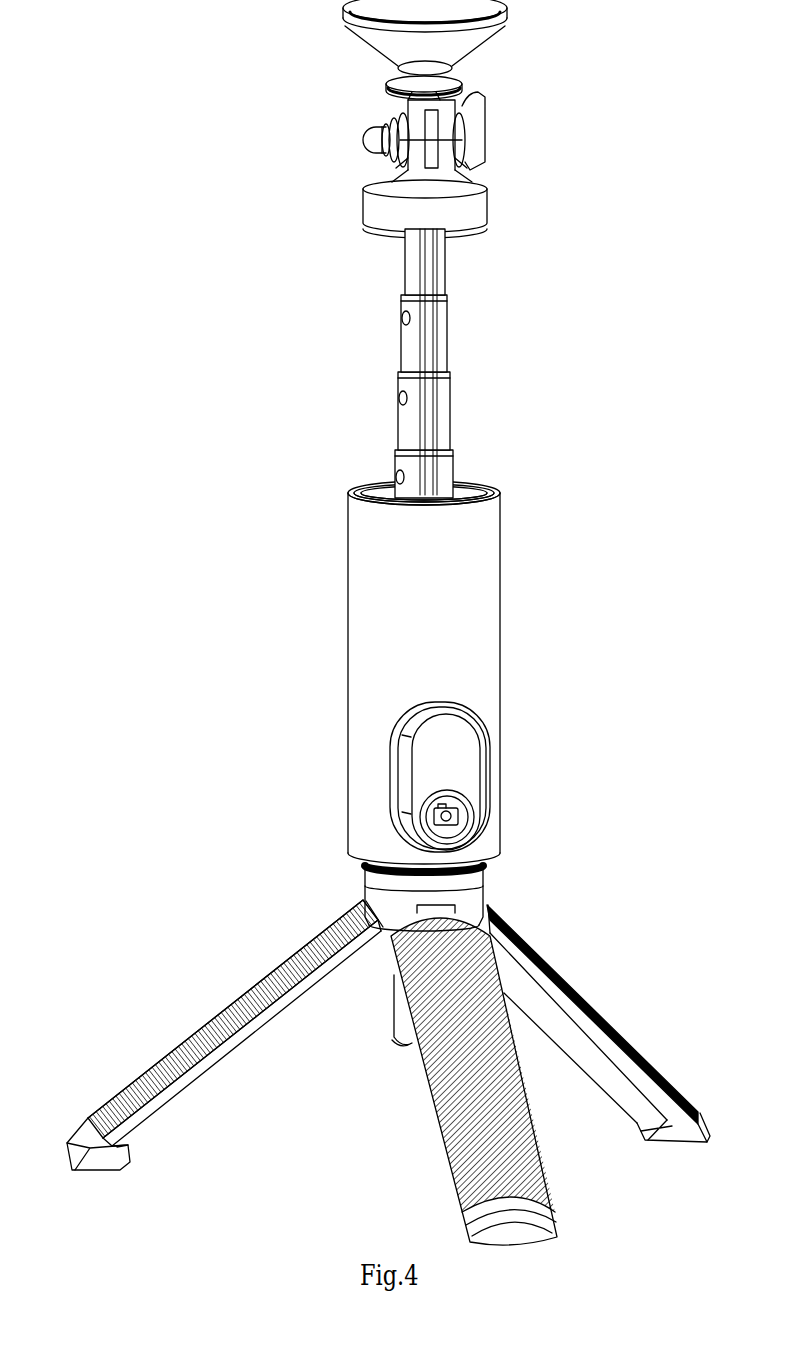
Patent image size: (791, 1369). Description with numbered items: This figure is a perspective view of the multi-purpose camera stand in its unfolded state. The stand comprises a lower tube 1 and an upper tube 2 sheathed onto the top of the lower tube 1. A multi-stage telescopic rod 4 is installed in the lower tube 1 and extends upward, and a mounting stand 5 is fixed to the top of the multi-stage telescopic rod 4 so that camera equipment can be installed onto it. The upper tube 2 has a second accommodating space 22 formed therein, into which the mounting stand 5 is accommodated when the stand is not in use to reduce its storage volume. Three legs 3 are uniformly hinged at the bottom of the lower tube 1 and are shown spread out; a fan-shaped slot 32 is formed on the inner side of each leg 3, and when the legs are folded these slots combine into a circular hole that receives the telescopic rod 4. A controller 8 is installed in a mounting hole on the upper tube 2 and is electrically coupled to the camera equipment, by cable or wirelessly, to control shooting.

The lower tube 1 is at (467, 902).
The upper tube 2 is at (471, 643).
The second accommodating space 22 is at (468, 500).
The leg 3 is at (598, 979).
The fan-shaped slot 32 is at (572, 1035).
The multi-stage telescopic rod 4 is at (410, 488).
The mounting stand 5 is at (437, 153).
The controller 8 is at (451, 773).